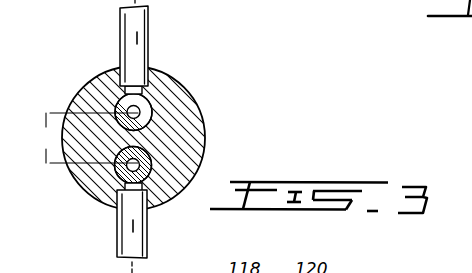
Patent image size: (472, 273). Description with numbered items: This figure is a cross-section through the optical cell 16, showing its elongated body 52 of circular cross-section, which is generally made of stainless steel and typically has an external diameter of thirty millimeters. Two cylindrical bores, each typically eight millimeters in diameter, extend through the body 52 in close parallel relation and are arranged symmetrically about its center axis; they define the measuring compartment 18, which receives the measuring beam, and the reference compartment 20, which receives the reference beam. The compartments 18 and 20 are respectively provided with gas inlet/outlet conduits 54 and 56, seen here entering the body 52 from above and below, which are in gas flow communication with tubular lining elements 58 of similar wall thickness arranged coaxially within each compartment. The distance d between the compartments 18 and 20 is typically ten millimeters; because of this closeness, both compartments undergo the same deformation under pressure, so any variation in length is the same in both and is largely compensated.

The optical cell 16 is at (203, 72).
The measuring compartment 18 is at (128, 97).
The reference compartment 20 is at (131, 168).
The elongated body 52 is at (193, 146).
The gas inlet/outlet conduit 54 is at (138, 53).
The gas inlet/outlet conduit 56 is at (143, 247).
The tubular lining element 58 is at (152, 115).
The distance between compartments d is at (43, 138).